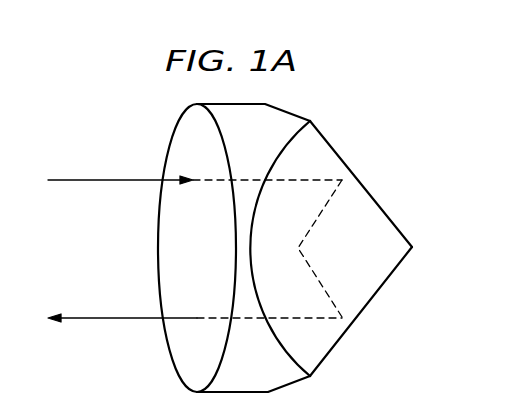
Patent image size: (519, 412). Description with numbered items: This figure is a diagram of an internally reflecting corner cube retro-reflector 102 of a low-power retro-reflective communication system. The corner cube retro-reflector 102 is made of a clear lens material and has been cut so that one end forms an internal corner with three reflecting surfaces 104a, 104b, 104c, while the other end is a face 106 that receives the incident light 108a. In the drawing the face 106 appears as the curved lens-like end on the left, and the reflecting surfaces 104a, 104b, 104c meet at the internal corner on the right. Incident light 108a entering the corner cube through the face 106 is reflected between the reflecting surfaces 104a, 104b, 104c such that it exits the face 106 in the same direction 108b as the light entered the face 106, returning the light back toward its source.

The corner cube retro-reflector 102 is at (365, 112).
The reflecting surface 104a is at (379, 180).
The reflecting surface 104b is at (378, 318).
The reflecting surface 104c is at (373, 246).
The face 106 is at (185, 352).
The incident light 108a is at (93, 180).
The direction 108b is at (93, 318).